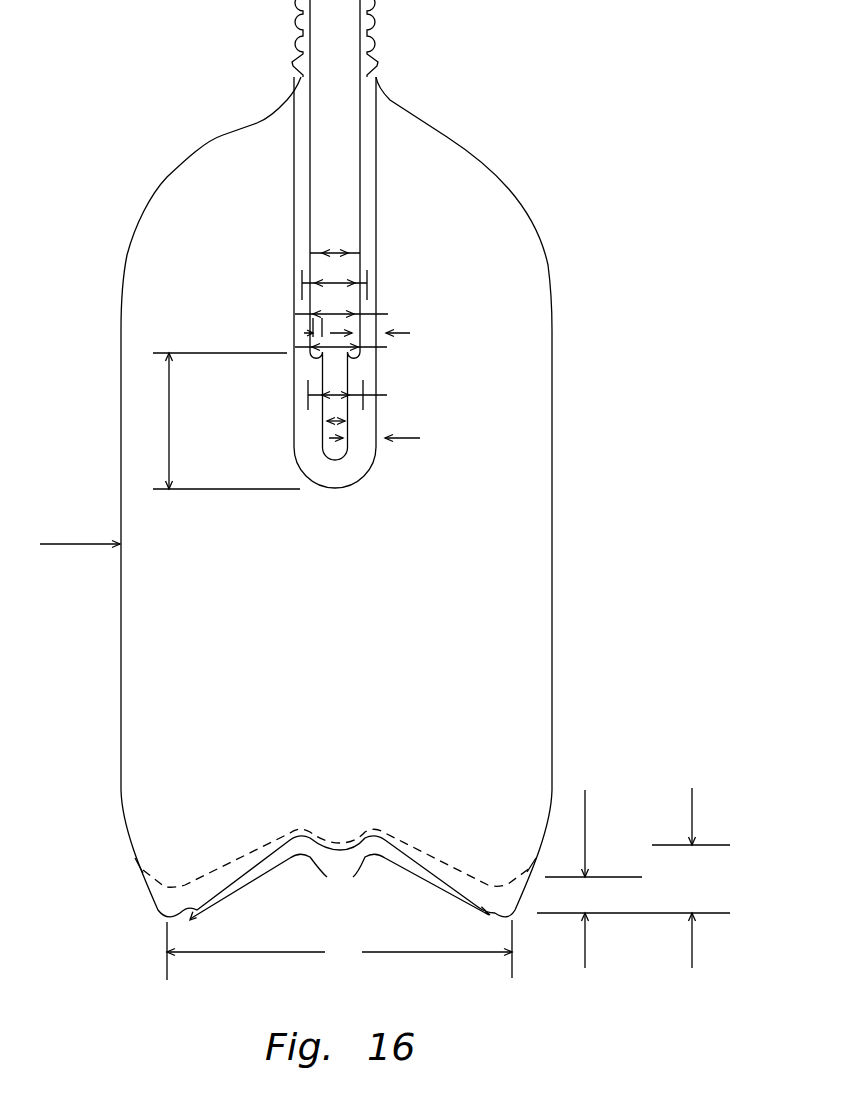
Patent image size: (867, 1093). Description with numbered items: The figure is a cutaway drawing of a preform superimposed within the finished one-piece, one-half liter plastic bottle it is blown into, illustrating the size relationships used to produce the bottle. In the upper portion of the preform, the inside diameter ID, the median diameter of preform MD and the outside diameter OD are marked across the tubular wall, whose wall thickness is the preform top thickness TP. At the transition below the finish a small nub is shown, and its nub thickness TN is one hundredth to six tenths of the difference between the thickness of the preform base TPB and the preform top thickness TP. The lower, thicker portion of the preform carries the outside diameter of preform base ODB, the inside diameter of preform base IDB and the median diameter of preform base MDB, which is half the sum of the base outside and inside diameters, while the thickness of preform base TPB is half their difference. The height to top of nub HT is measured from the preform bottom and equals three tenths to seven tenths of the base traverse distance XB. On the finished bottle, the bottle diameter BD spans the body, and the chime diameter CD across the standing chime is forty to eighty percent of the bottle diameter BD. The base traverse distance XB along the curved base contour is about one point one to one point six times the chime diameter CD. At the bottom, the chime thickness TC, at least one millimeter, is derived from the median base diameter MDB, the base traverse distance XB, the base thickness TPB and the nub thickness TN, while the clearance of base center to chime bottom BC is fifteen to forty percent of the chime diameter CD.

The inside diameter of preform ID is at (362, 251).
The median diameter of preform MD is at (372, 283).
The outside diameter of preform OD is at (388, 314).
The preform top thickness TP is at (410, 333).
The nub thickness TN is at (298, 322).
The outside diameter of preform base ODB is at (388, 347).
The median diameter of preform base MDB is at (388, 395).
The inside diameter of preform base IDB is at (372, 424).
The thickness of preform base TPB is at (420, 438).
The bottle diameter BD is at (553, 540).
The height to top of nub HT is at (226, 421).
The chime thickness TC is at (633, 860).
The clearance of base center to chime bottom BC is at (691, 859).
The base traverse distance XB is at (340, 887).
The chime diameter CD is at (339, 950).